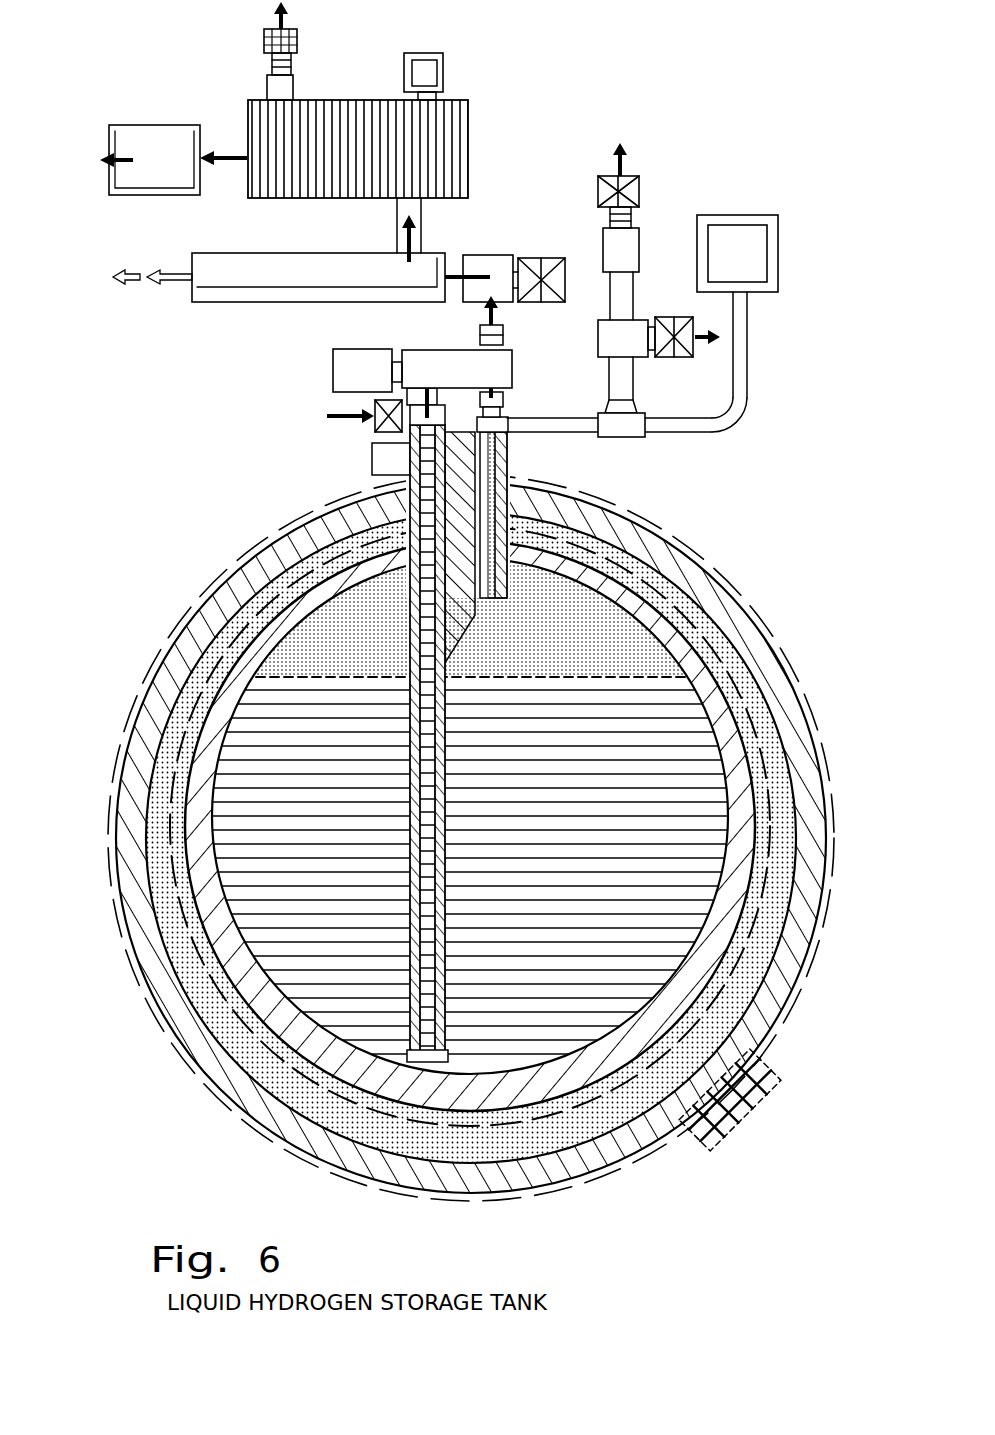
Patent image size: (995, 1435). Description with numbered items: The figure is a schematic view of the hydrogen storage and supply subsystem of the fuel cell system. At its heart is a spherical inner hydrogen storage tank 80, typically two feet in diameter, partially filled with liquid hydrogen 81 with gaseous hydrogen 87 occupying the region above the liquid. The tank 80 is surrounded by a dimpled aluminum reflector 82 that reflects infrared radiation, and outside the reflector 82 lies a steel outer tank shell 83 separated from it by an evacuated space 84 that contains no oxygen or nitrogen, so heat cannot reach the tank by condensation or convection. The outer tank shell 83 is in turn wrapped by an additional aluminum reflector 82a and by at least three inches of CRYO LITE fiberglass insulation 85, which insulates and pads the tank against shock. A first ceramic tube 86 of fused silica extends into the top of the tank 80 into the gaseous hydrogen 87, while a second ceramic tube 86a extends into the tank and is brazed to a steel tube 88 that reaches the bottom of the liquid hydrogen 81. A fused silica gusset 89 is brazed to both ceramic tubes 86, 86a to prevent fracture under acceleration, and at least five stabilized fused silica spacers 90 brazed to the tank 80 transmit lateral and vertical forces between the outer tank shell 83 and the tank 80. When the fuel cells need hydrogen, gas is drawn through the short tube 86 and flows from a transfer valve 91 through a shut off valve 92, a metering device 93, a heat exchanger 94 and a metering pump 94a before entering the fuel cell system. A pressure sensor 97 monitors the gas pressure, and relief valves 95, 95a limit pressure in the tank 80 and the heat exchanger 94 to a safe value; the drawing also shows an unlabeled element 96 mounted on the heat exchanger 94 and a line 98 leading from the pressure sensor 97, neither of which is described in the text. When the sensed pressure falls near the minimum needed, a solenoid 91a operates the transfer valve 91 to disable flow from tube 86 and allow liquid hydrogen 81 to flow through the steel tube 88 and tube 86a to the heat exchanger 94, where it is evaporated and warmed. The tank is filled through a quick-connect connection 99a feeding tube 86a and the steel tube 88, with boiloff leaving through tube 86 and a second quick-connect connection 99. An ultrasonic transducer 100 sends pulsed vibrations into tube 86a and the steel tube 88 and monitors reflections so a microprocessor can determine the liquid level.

The inner hydrogen storage tank 80 is at (737, 1057).
The liquid hydrogen 81 is at (572, 943).
The aluminum reflector 82 is at (550, 1163).
The additional aluminum reflector 82a is at (627, 1158).
The steel outer tank shell 83 is at (577, 1148).
The space 84 is at (247, 1107).
The fiberglass insulation 85 is at (742, 1110).
The first ceramic tube 86 is at (603, 563).
The second ceramic tube 86a is at (405, 482).
The gaseous hydrogen 87 is at (563, 637).
The steel tube 88 is at (413, 658).
The fused silica gusset 89 is at (538, 660).
The stabilized fused silica spacers 90 is at (733, 682).
The transfer valve 91 is at (500, 362).
The solenoid 91a is at (363, 368).
The shut off valve 92 is at (500, 296).
The metering device 93 is at (328, 280).
The heat exchanger 94 is at (310, 150).
The metering pump 94a is at (155, 167).
The relief valve 95 is at (297, 36).
The relief valve 95a is at (620, 190).
The pressure gauge 96 is at (443, 67).
The pressure sensor 97 is at (768, 238).
The connecting line 98 is at (745, 340).
The second quick-connect connection 99 is at (675, 358).
The quick-connect connection 99a is at (398, 427).
The ultrasonic transducer 100 is at (392, 462).